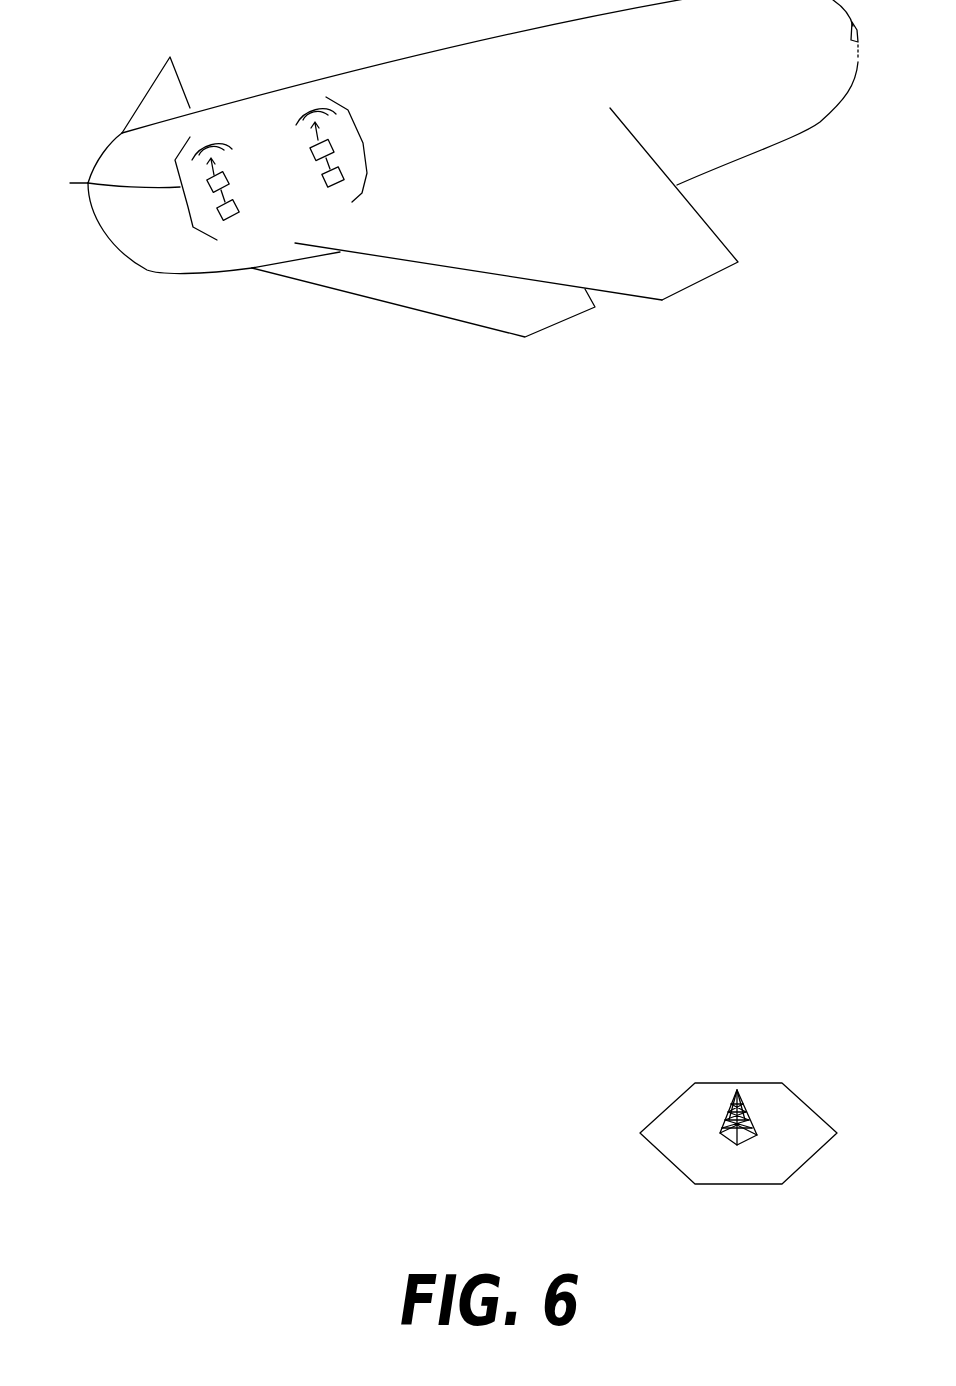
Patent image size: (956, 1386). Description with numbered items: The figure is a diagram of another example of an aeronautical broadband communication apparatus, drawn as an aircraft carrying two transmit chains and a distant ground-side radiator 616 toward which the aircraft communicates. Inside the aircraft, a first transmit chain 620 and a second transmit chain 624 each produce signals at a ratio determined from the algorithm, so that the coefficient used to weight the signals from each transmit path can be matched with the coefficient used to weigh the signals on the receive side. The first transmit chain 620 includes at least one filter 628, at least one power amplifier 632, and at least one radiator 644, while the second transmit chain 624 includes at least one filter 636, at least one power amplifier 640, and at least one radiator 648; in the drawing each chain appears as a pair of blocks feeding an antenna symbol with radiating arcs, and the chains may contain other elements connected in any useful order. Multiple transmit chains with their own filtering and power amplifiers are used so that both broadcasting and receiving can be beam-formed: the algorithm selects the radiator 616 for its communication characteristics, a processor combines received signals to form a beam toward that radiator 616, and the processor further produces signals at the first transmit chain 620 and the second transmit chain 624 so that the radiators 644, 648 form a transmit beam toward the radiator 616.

The radiator 616 is at (749, 1108).
The first transmit chain 620 is at (447, 168).
The second transmit chain 624 is at (358, 140).
The filter 628 is at (227, 180).
The power amplifier 632 is at (270, 207).
The filter 636 is at (312, 152).
The power amplifier 640 is at (333, 186).
The radiator 644 is at (215, 140).
The radiator 648 is at (323, 103).